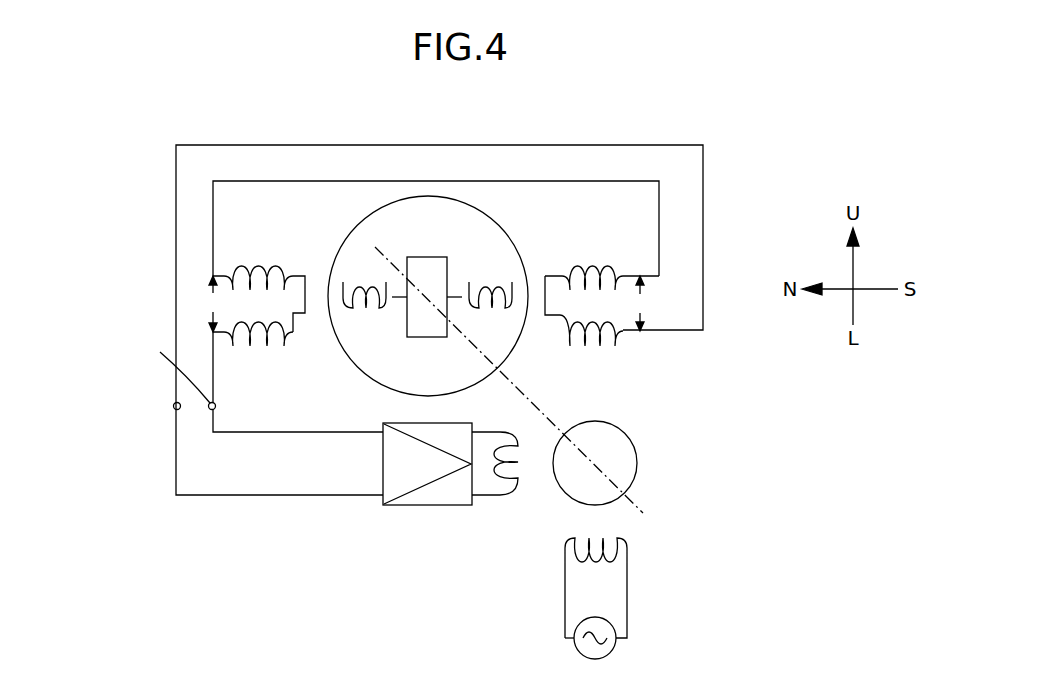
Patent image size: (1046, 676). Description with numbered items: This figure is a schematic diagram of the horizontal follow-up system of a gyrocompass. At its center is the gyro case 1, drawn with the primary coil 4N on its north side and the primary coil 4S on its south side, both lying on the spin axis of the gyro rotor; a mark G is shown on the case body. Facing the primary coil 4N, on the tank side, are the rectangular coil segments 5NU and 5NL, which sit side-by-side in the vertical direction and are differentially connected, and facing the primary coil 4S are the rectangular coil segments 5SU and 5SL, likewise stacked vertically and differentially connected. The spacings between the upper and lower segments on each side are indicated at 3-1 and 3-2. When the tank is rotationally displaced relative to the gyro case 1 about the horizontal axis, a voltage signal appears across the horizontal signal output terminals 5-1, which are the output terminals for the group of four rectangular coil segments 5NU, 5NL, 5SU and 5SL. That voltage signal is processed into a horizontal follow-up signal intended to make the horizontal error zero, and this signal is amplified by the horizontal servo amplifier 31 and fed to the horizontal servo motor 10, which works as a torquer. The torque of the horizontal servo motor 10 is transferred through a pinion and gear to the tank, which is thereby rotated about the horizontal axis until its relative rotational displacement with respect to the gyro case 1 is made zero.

The gyro case 1 is at (520, 332).
The center of gravity of rotor G is at (425, 337).
The primary coil 4N is at (366, 309).
The primary coil 4S is at (490, 283).
The rectangular coil segment 5NU is at (263, 265).
The rectangular coil segment 5NL is at (268, 347).
The rectangular coil segment 5SU is at (602, 265).
The rectangular coil segment 5SL is at (607, 347).
The gap between north coils 3-1 is at (216, 304).
The gap between south coils 3-2 is at (640, 303).
The horizontal signal output terminals 5-1 is at (176, 402).
The horizontal servo amplifier 31 is at (418, 505).
The horizontal servo motor 10 is at (554, 485).